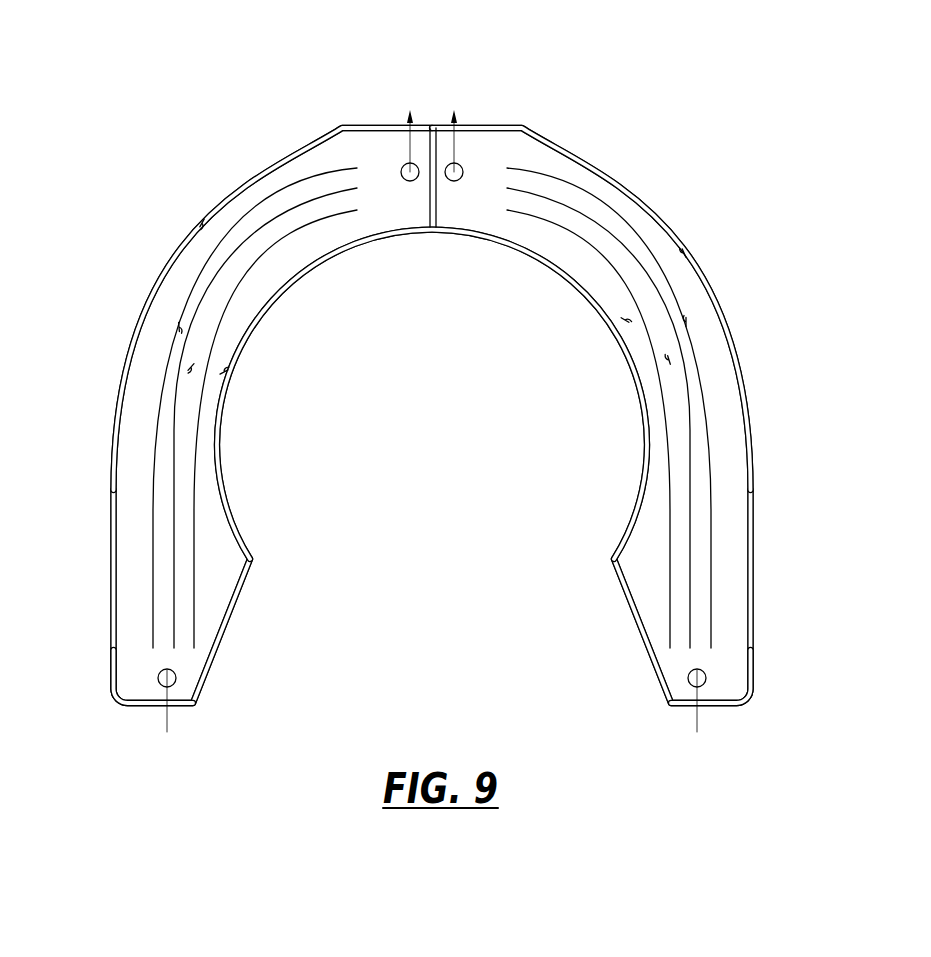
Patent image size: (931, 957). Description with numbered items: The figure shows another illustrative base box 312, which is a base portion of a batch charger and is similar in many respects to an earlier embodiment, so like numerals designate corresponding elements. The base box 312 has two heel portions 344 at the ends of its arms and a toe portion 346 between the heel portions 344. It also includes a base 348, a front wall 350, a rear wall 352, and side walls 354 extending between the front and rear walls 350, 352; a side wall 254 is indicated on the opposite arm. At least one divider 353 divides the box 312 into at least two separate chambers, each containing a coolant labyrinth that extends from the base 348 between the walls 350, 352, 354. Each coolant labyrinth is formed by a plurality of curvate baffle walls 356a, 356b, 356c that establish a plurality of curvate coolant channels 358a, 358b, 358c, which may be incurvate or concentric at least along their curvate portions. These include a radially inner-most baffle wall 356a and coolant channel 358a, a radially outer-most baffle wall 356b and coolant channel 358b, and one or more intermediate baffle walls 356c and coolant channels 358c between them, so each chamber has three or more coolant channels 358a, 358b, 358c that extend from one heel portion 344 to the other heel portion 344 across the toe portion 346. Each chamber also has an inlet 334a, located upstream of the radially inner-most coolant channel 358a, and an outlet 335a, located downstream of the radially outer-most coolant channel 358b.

The base box 312 is at (134, 89).
The left arm 254 is at (112, 507).
The side walls 354 is at (752, 547).
The toe portion 346 is at (302, 117).
The rear wall 352 is at (532, 124).
The base 348 is at (472, 197).
The front wall 350 is at (339, 252).
The divider 353 is at (436, 198).
The heel portions 344 is at (214, 718).
The inlet 334a is at (153, 696).
The outlet 335a is at (391, 149).
The radially inner-most baffle wall 356a is at (233, 297).
The radially outer-most baffle wall 356b is at (240, 205).
The intermediate baffle wall 356c is at (207, 285).
The radially inner-most coolant channel 358a is at (225, 374).
The radially outer-most coolant channel 358b is at (200, 222).
The intermediate coolant channel 358c is at (190, 367).